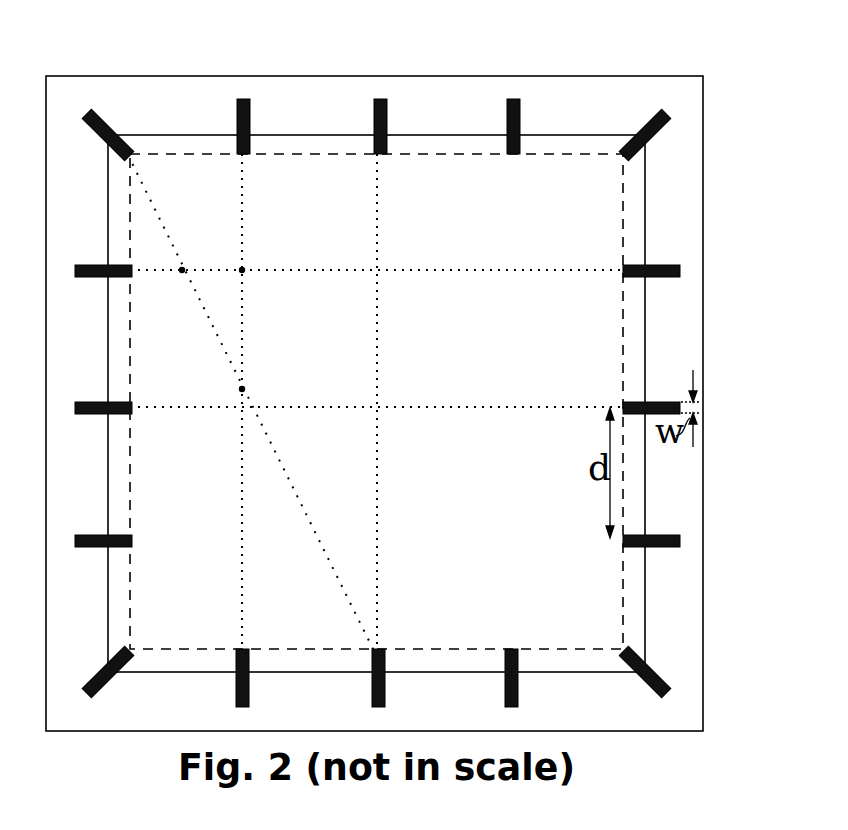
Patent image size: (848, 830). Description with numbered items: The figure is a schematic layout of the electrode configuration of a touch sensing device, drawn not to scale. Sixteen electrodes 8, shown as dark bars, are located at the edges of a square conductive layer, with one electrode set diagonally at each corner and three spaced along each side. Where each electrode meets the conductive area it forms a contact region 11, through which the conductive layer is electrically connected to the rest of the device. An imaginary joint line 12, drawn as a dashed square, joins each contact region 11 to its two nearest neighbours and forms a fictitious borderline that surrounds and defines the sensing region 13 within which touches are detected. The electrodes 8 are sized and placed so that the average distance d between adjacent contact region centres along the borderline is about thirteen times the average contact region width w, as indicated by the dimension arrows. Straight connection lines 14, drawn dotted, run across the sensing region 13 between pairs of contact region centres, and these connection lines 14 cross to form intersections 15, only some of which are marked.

The electrodes 8 is at (387, 115).
The contact regions 11 is at (377, 147).
The joint line 12 is at (130, 231).
The sensing region 13 is at (528, 362).
The connection lines 14 is at (242, 249).
The intersections 15 is at (242, 389).